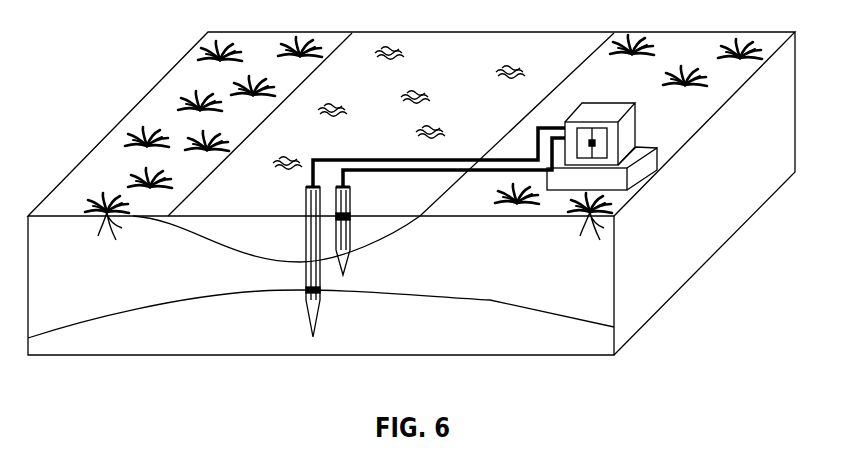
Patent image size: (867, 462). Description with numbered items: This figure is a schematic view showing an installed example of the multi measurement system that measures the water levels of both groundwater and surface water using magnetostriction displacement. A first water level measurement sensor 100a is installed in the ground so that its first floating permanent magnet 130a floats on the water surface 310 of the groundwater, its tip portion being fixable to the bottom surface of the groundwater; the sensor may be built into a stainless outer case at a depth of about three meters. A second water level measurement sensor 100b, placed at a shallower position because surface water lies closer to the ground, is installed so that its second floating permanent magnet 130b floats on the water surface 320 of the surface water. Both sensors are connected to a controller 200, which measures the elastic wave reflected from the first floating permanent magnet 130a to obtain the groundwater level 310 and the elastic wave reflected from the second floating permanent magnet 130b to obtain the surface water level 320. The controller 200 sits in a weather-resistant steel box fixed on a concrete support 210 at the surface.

The first water level measurement sensor 100a is at (266, 262).
The second water level measurement sensor 100b is at (385, 231).
The first floating permanent magnet 130a is at (307, 294).
The second floating permanent magnet 130b is at (350, 216).
The controller 200 is at (608, 106).
The base 210 is at (648, 143).
The water level of the groundwater 310 is at (210, 297).
The water level of the surface water 320 is at (245, 216).